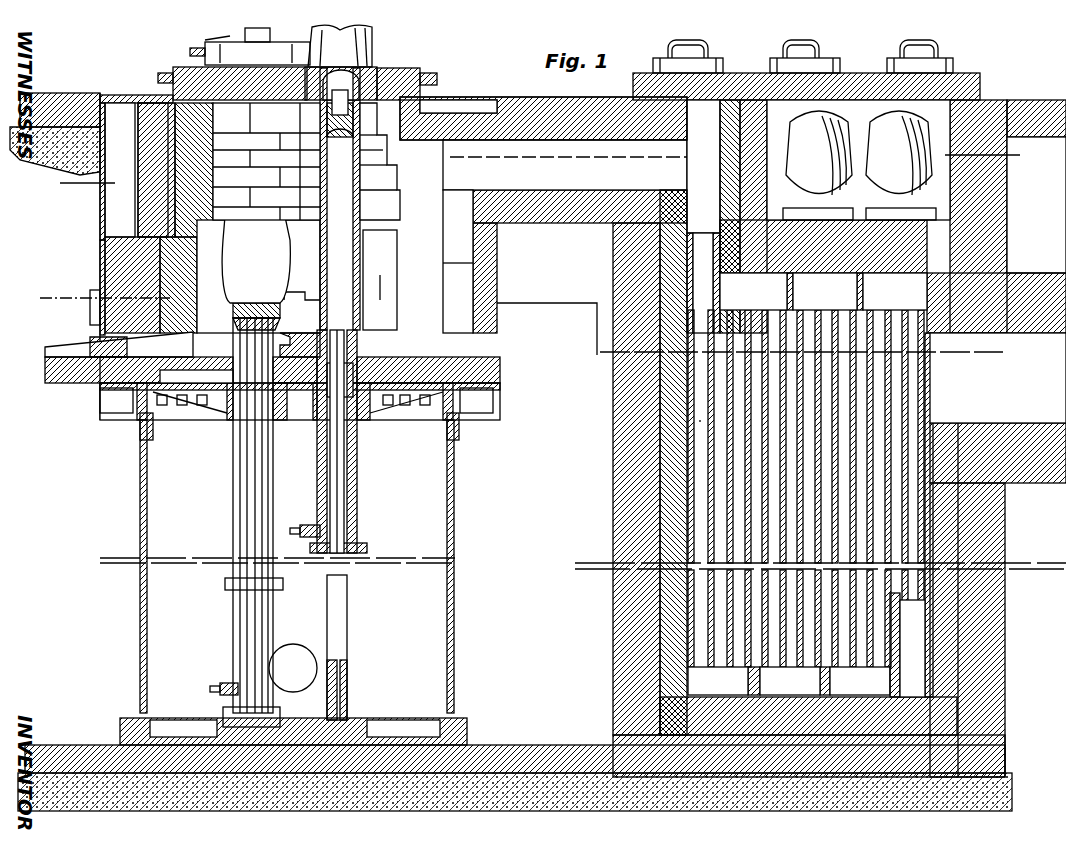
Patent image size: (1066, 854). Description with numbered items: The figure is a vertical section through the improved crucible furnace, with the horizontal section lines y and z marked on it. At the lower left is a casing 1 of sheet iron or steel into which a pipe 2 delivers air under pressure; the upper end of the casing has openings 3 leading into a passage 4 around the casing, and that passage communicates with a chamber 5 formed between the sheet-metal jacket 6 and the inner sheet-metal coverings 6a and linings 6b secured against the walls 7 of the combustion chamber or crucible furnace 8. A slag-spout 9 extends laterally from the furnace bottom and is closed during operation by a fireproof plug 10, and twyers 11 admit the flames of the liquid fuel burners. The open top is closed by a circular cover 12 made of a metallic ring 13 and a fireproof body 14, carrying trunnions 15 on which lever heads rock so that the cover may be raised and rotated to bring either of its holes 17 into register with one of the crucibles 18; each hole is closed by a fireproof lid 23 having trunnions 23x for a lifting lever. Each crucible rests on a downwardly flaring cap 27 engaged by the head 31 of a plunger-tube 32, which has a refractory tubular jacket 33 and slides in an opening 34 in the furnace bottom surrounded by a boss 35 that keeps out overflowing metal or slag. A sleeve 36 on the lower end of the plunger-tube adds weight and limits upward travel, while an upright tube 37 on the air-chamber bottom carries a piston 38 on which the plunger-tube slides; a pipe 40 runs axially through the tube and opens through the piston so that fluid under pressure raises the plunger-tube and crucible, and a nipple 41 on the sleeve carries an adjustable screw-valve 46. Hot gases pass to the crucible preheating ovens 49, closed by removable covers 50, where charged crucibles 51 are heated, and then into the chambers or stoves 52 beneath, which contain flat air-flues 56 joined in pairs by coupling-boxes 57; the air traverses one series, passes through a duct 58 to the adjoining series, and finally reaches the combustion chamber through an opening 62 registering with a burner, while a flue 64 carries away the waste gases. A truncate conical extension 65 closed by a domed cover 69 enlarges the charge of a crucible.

The casing 1 is at (454, 505).
The pipe 2 is at (293, 668).
The openings 3 is at (182, 405).
The passage 4 is at (118, 402).
The chamber 5 is at (138, 205).
The sheet-metal jacket 6 is at (122, 188).
The inner sheet-metal coverings 6a is at (103, 258).
The linings 6b is at (103, 220).
The walls 7 is at (130, 257).
The combustion chamber or crucible furnace 8 is at (328, 199).
The slag-spout 9 is at (80, 350).
The plug 10 is at (60, 365).
The twyers 11 is at (90, 305).
The circular cover 12 is at (190, 52).
The metallic ring 13 is at (430, 98).
The fireproof body 14 is at (395, 70).
The trunnions 15 is at (158, 78).
The holes 17 is at (240, 83).
The crucibles 18 is at (303, 140).
The circular lids 23 is at (257, 47).
The diametrical trunnions 23x is at (195, 35).
The downwardly flaring cap 27 is at (239, 314).
The head 31 is at (340, 118).
The plunger-tube 32 is at (318, 250).
The tubular jacket 33 is at (302, 293).
The opening 34 is at (212, 412).
The boss 35 is at (312, 340).
The sleeve 36 is at (358, 513).
The upright tube 37 is at (348, 636).
The piston 38 is at (338, 441).
The pipe 40 is at (347, 608).
The nipple 41 is at (262, 598).
The screw-valve 46 is at (237, 615).
The crucible preheating ovens 49 is at (858, 160).
The removable covers 50 is at (848, 73).
The charged crucibles 51 is at (859, 165).
The chambers or stoves 52 is at (700, 415).
The flat air-flues 56 is at (740, 466).
The coupling-boxes 57 is at (807, 484).
The duct 58 is at (912, 633).
The opening 62 is at (380, 280).
The flue 64 is at (998, 378).
The truncate conical extension 65 is at (256, 228).
The domed cover 69 is at (250, 170).
The line y— y is at (537, 170).
The line z— z is at (522, 325).